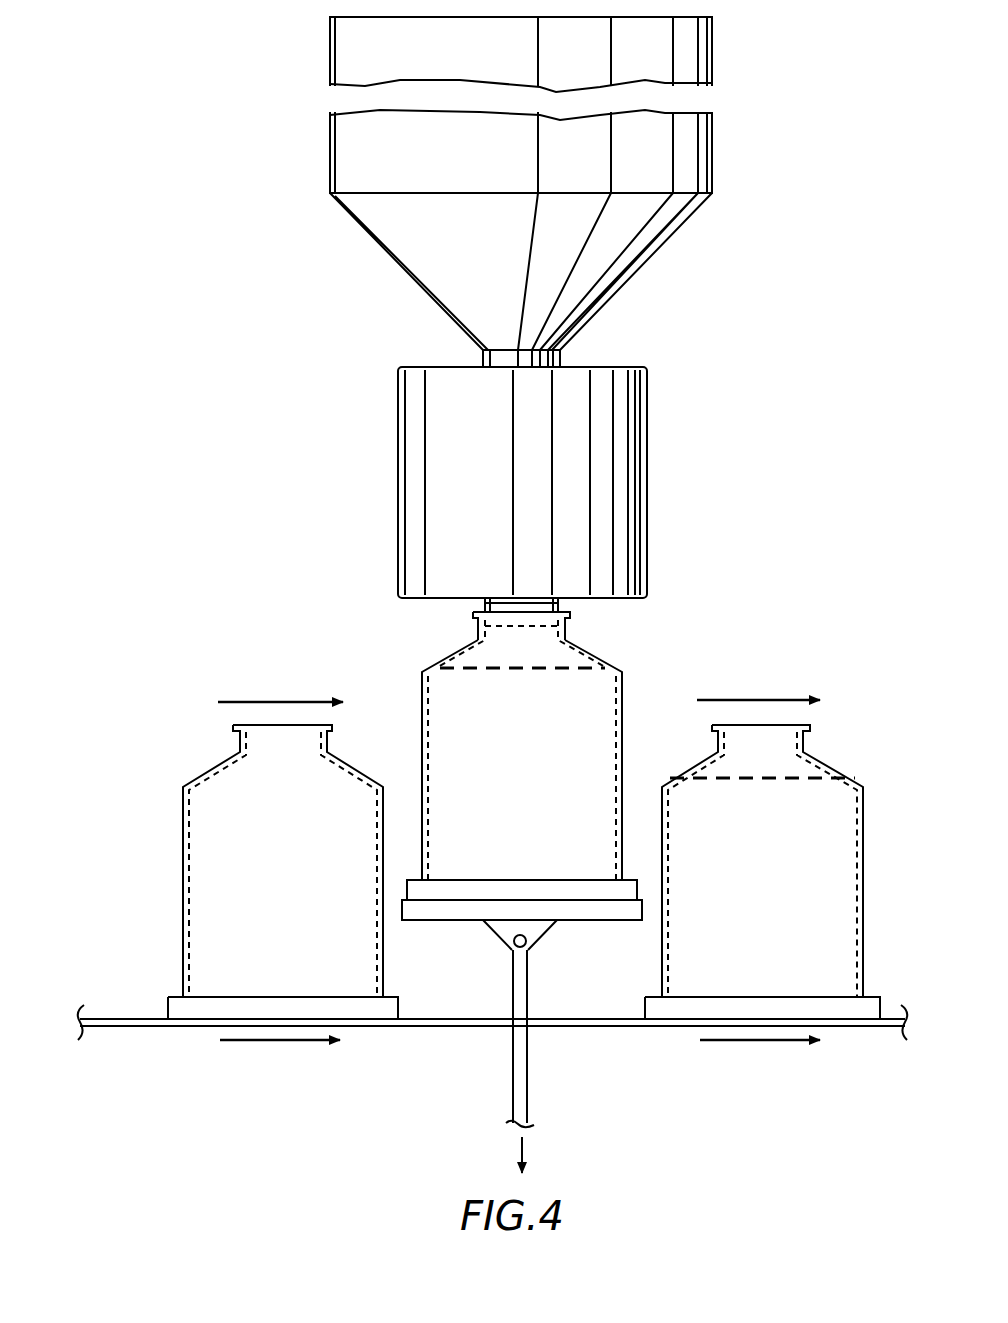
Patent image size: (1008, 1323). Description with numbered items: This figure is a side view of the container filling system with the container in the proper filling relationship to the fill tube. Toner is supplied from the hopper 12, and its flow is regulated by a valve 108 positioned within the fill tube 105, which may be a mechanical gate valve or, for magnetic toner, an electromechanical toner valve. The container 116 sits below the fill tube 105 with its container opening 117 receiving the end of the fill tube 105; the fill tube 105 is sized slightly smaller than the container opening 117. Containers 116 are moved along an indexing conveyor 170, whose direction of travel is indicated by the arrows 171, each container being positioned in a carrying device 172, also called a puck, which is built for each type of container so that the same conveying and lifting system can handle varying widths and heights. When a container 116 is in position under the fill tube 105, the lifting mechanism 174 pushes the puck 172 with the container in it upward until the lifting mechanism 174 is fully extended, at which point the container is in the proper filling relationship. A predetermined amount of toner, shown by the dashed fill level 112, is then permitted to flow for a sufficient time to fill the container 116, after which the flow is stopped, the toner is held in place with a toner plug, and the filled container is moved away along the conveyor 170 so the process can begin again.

The hopper 12 is at (335, 163).
The valve 108 is at (647, 492).
The fill tube 105 is at (556, 604).
The container opening 117 is at (567, 618).
The product fill level / liner 112 is at (475, 660).
The container 116 is at (422, 722).
The carrying device 172 is at (553, 885).
The lifting mechanism 174 is at (598, 920).
The indexing conveyor 170 is at (128, 1019).
The conveyor travel direction arrow 171 is at (270, 1042).